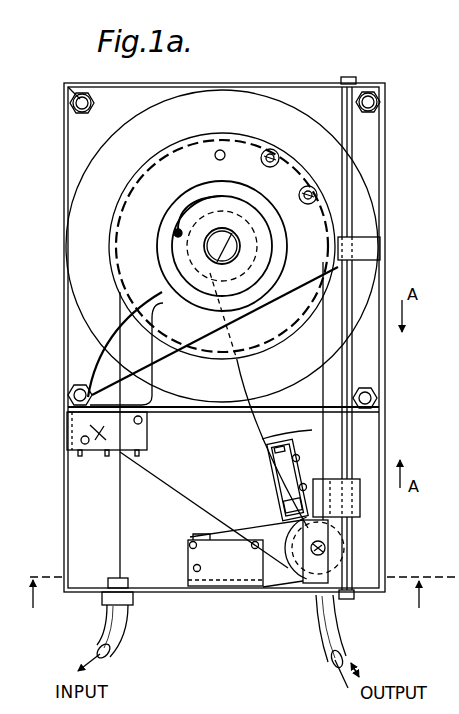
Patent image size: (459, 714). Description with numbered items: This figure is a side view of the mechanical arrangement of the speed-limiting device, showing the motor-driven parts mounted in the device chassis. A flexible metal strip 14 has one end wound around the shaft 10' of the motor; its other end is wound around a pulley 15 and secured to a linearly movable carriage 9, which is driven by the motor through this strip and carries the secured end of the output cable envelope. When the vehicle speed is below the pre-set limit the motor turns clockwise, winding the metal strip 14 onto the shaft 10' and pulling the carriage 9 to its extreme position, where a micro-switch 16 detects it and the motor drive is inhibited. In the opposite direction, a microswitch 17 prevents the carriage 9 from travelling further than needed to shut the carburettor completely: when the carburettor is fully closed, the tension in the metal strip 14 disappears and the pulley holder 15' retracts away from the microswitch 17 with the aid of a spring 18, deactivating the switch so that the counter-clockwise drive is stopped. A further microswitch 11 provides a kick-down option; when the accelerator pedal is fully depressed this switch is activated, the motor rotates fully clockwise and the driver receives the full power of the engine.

The shaft of motor 10' is at (222, 226).
The microswitch 11 is at (106, 428).
The flexible metal strip 14 is at (262, 439).
The linearly movable carriage 9 is at (362, 500).
The microswitch 17 is at (285, 466).
The pulley 15 is at (354, 550).
The micro-switch 16 is at (213, 572).
The spring 18 is at (293, 596).
The pulley holder 15' is at (367, 615).